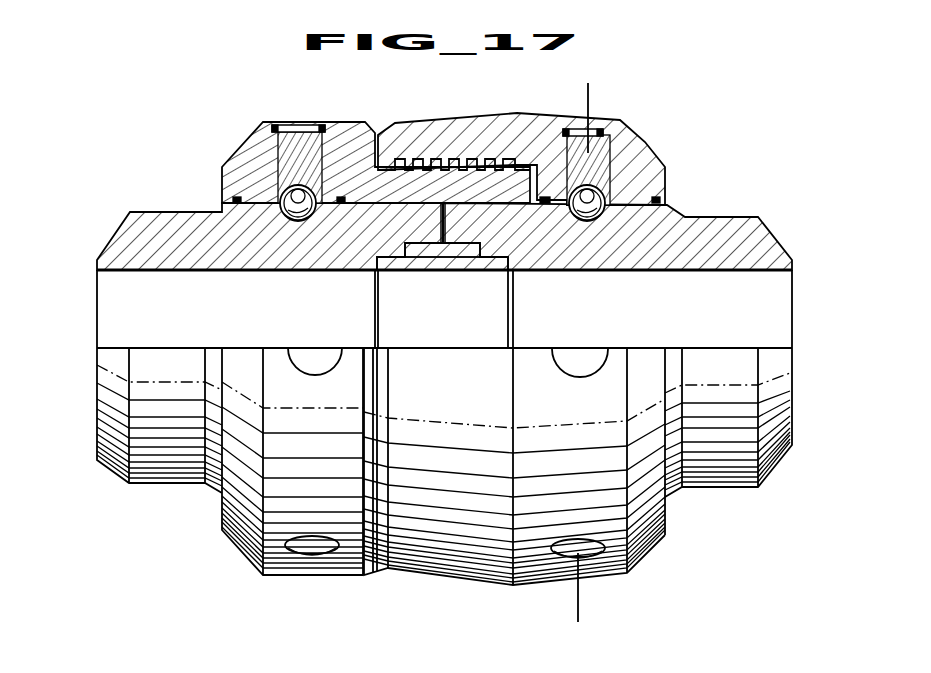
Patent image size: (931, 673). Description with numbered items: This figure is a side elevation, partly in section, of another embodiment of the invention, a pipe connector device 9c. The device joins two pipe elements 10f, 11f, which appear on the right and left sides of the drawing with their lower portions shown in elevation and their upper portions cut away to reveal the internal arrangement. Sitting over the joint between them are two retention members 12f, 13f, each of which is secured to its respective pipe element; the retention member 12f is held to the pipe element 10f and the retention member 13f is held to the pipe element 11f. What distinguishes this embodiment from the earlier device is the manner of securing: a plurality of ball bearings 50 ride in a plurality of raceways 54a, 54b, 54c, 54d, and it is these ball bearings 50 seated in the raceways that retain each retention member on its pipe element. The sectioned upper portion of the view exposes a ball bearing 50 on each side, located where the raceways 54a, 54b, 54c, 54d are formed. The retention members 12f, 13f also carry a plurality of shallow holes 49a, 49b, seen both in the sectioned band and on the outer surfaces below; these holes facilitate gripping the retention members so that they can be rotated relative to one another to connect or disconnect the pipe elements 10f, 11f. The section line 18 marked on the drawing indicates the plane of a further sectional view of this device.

The pipe connector device 9c is at (732, 130).
The pipe element 10f is at (762, 233).
The pipe element 11f is at (128, 224).
The retention member 12f is at (495, 113).
The retention member 13f is at (343, 122).
The section line 18 is at (657, 102).
The shallow hole 49a is at (558, 362).
The shallow hole 49b is at (306, 340).
The ball bearings 50 is at (281, 202).
The raceway 54a is at (589, 222).
The raceway 54b is at (603, 192).
The raceway 54c is at (300, 222).
The raceway 54d is at (282, 200).